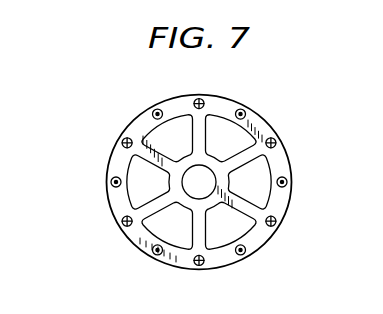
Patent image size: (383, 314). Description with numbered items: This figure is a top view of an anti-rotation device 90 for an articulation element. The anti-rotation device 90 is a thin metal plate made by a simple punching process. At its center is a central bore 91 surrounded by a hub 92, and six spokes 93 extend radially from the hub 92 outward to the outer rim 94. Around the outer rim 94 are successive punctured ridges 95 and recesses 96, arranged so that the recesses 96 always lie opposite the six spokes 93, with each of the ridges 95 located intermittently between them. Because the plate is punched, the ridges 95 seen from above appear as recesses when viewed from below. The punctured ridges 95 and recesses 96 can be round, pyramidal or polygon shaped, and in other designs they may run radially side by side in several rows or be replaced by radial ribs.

The anti-rotation device 90 is at (105, 122).
The central bore 91 is at (207, 180).
The hub 92 is at (224, 184).
The spokes 93 is at (249, 211).
The outer rim 94 is at (219, 106).
The punctured ridges 95 is at (113, 182).
The recesses 96 is at (124, 224).